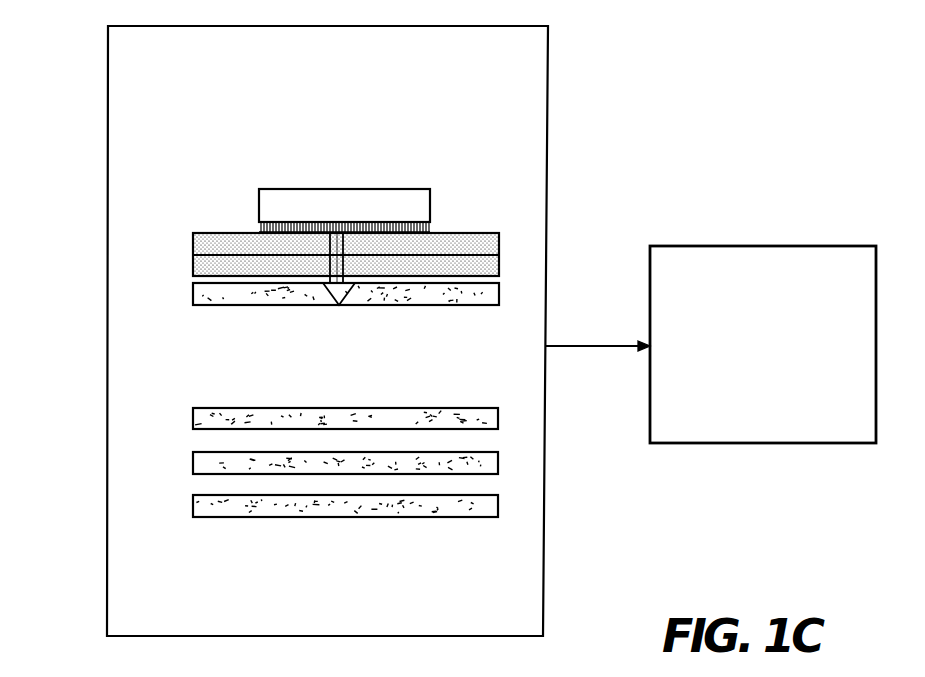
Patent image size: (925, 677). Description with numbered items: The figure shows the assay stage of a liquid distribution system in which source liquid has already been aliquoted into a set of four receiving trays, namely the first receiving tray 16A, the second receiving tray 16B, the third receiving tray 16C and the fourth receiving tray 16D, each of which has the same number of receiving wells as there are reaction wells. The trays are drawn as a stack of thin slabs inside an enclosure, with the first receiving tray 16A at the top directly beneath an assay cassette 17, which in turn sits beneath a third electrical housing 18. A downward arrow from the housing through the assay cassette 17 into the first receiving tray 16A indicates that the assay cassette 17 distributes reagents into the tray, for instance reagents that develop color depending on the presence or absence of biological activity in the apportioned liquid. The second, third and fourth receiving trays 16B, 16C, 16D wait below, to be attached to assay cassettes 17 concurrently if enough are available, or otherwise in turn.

The third electrical housing 18 is at (312, 189).
The assay cassette 17 is at (499, 238).
The first receiving tray 16A is at (193, 287).
The second receiving tray 16B is at (192, 417).
The third receiving tray 16C is at (192, 461).
The fourth receiving tray 16D is at (192, 503).